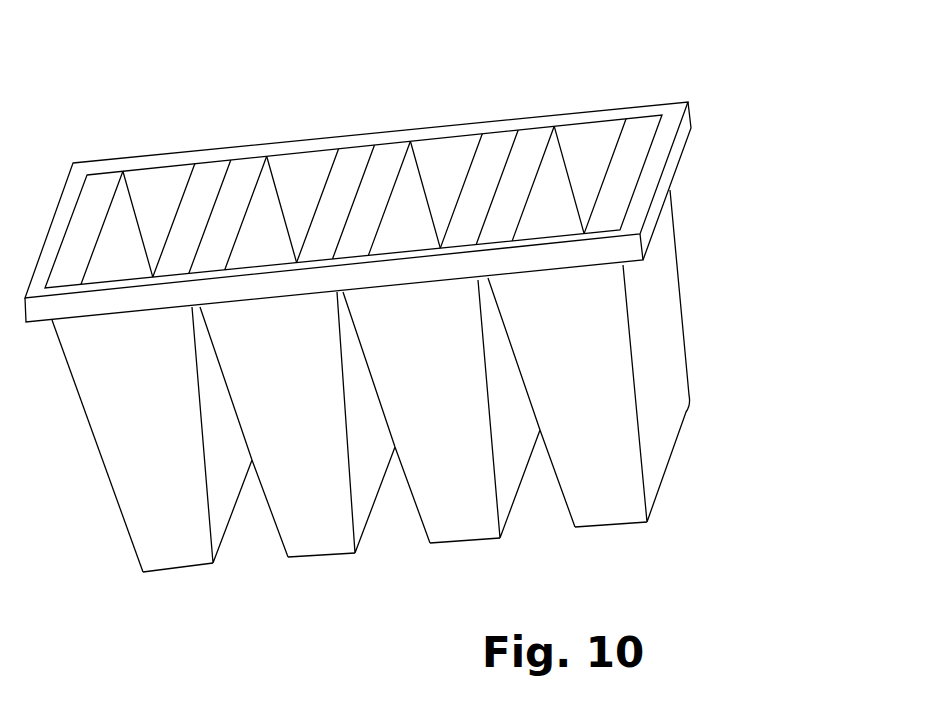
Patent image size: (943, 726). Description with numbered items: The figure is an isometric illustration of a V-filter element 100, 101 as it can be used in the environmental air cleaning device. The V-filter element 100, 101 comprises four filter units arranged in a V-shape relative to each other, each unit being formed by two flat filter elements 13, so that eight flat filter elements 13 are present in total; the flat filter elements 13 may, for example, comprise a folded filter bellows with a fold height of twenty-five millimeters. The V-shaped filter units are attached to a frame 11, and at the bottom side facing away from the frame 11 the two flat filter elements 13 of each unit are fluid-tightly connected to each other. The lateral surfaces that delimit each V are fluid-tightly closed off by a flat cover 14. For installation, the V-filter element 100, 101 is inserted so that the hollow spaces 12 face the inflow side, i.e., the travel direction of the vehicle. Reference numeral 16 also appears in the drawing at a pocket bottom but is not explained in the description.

The filter 100 is at (728, 102).
The pocket filter 101 is at (427, 319).
The frame 11 is at (360, 140).
The pleat opening 12 is at (592, 157).
The separating wall 13 is at (205, 172).
The filter pocket 14 is at (575, 503).
The pocket bottom 16 is at (618, 527).